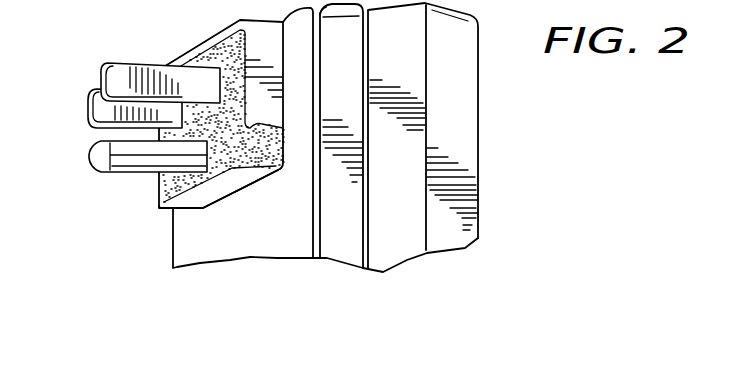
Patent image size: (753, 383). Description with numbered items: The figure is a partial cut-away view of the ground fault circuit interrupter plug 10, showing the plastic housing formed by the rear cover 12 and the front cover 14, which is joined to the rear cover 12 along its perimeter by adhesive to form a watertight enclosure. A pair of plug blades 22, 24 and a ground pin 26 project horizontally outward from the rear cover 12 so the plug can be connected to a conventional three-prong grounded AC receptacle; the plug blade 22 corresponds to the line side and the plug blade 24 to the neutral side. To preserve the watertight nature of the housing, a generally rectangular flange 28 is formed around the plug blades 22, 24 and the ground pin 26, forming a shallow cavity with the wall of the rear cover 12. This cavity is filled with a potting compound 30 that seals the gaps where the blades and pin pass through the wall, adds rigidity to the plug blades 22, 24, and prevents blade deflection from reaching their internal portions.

The ground fault circuit interrupter plug 10 is at (500, 123).
The rear cover 12 is at (263, 248).
The front cover 14 is at (472, 218).
The plug blade 22 is at (88, 100).
The plug blade 24 is at (133, 67).
The ground pin 26 is at (88, 150).
The flange 28 is at (219, 204).
The potting compound 30 is at (270, 160).